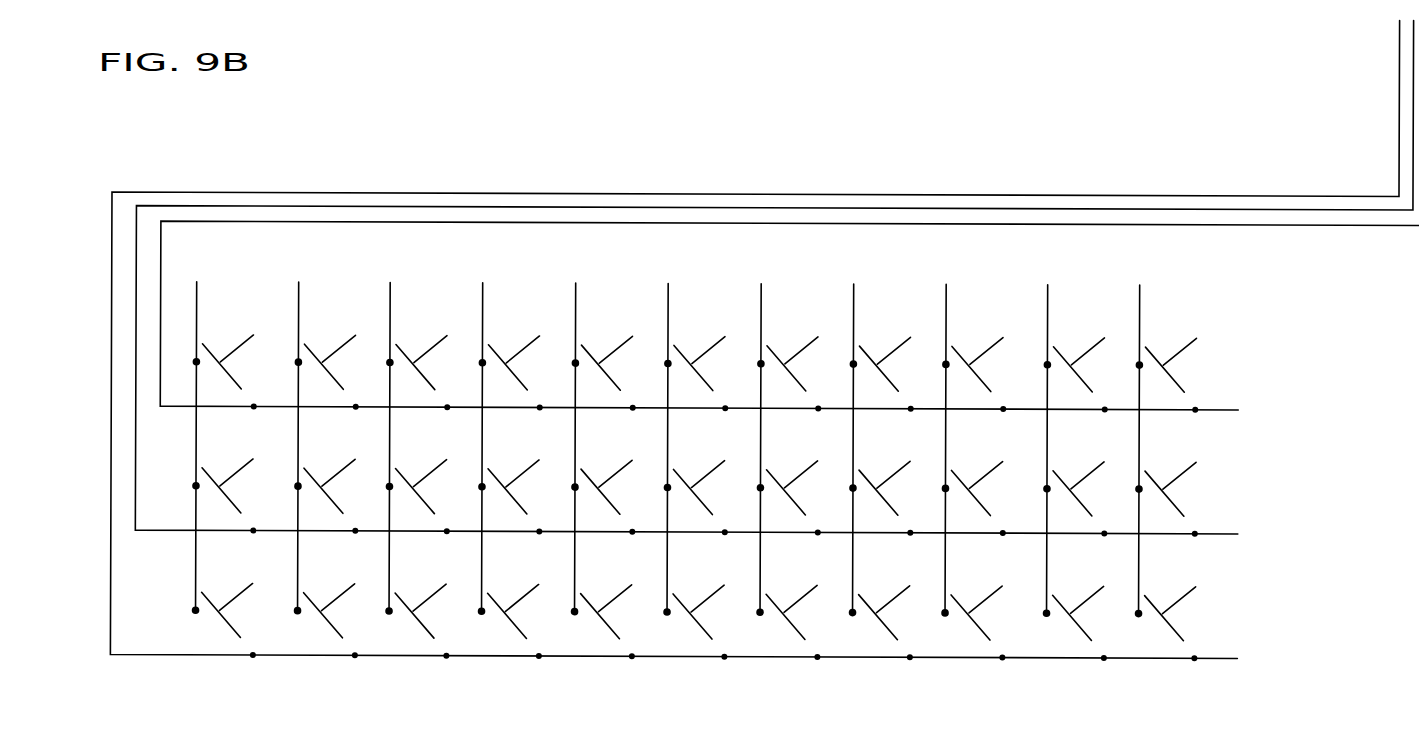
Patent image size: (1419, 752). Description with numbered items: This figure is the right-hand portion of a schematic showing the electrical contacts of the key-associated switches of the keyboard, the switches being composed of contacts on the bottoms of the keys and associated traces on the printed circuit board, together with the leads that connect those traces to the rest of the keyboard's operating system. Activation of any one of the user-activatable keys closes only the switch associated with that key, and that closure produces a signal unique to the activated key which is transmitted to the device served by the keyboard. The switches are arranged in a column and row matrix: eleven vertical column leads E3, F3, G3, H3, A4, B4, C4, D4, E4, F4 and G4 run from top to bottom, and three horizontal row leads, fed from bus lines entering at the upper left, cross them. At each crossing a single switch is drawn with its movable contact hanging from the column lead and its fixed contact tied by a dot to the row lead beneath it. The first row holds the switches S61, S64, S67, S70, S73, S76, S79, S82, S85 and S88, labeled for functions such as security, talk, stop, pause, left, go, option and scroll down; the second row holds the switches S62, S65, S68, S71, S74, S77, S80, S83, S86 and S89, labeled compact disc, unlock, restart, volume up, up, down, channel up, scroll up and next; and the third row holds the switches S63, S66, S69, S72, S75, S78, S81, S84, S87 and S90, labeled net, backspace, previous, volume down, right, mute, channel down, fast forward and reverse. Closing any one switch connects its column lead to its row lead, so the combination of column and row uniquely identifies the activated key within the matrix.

The column lead E3 is at (193, 433).
The column lead F3 is at (295, 433).
The column lead G3 is at (386, 433).
The column lead H3 is at (479, 434).
The column line A4 is at (572, 434).
The column line B4 is at (664, 434).
The column line C4 is at (757, 435).
The column line D4 is at (850, 435).
The column line E4 is at (942, 435).
The column line F4 is at (1044, 436).
The column line G4 is at (1136, 436).
The key-associated switch S61 is at (239, 342).
The key-associated switch S62 is at (233, 466).
The key-associated switch S63 is at (232, 591).
The key-associated switch S64 is at (335, 343).
The key-associated switch S65 is at (337, 467).
The key-associated switch S66 is at (334, 591).
The key-associated switch S67 is at (427, 343).
The key-associated switch S68 is at (430, 467).
The key-associated switch S69 is at (426, 591).
The key-associated switch S70 is at (519, 343).
The key-associated switch S71 is at (519, 467).
The key-associated switch S72 is at (518, 592).
The key-associated switch S73 is at (612, 344).
The key-associated switch S74 is at (612, 468).
The key-associated switch S75 is at (611, 592).
The key-associated switch S76 is at (705, 344).
The key-associated switch S77 is at (704, 468).
The key-associated switch S78 is at (704, 592).
The key-associated switch S79 is at (798, 344).
The key-associated switch S80 is at (797, 468).
The key-associated switch S81 is at (797, 593).
The key-associated switch S82 is at (894, 345).
The key-associated switch S83 is at (893, 469).
The key-associated switch S84 is at (889, 593).
The key-associated switch S85 is at (983, 364).
The key-associated switch S86 is at (982, 469).
The key-associated switch S87 is at (982, 593).
The key switch S88 is at (1084, 365).
The key switch S89 is at (1084, 489).
The key switch S90 is at (1083, 613).